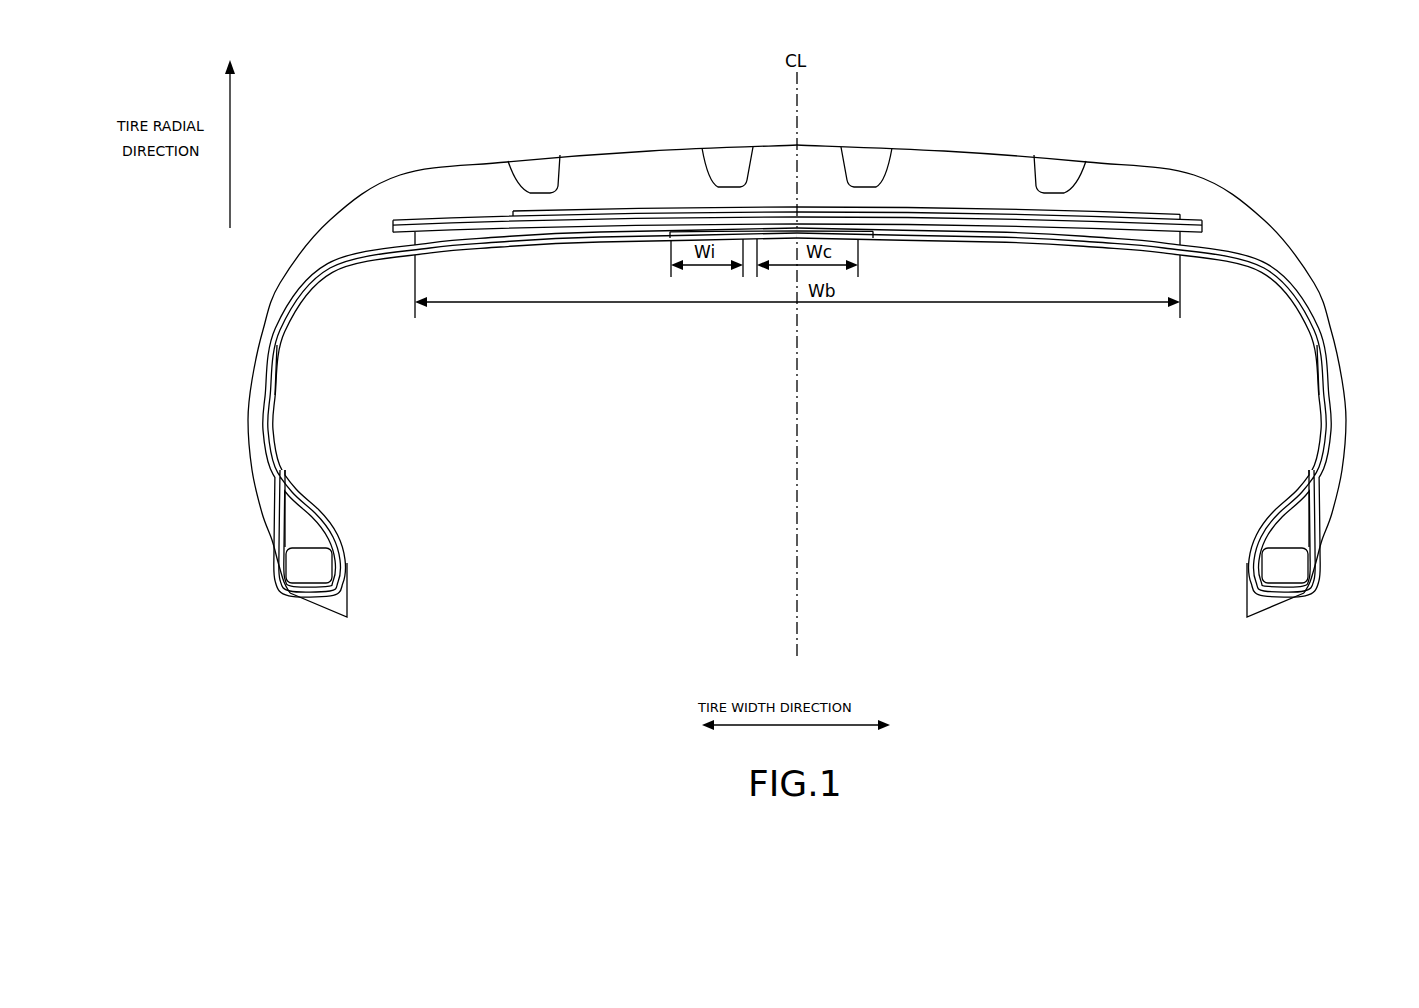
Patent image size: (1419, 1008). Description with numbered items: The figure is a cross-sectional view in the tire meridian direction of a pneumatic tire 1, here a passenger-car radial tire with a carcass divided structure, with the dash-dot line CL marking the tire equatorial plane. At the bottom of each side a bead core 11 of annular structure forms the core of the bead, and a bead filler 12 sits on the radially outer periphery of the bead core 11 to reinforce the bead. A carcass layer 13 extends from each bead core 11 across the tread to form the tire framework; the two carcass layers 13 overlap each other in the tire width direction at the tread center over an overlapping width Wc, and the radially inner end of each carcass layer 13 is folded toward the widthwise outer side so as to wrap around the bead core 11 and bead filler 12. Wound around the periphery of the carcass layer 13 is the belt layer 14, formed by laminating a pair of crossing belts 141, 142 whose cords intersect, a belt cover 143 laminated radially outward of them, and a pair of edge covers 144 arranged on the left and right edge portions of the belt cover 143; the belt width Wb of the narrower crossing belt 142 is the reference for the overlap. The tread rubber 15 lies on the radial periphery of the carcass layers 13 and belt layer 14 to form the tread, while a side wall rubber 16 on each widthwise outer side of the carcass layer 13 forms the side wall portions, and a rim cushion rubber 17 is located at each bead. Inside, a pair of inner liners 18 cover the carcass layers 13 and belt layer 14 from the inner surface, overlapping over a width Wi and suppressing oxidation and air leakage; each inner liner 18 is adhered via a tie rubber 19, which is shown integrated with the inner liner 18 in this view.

The pneumatic tire 1 is at (1181, 100).
The bead core 11 is at (303, 565).
The bead filler 12 is at (300, 532).
The carcass layer 13 is at (333, 265).
The belt layer 14 is at (797, 127).
The crossing belt 141 is at (1161, 63).
The crossing belt 142 is at (1025, 219).
The belt cover 143 is at (1076, 215).
The edge cover 144 is at (423, 214).
The tread rubber 15 is at (1210, 185).
The side wall rubber 16 is at (267, 310).
The rim cushion rubber 17 is at (317, 597).
The inner liner 18 is at (798, 370).
The tie rubber 19 is at (270, 370).